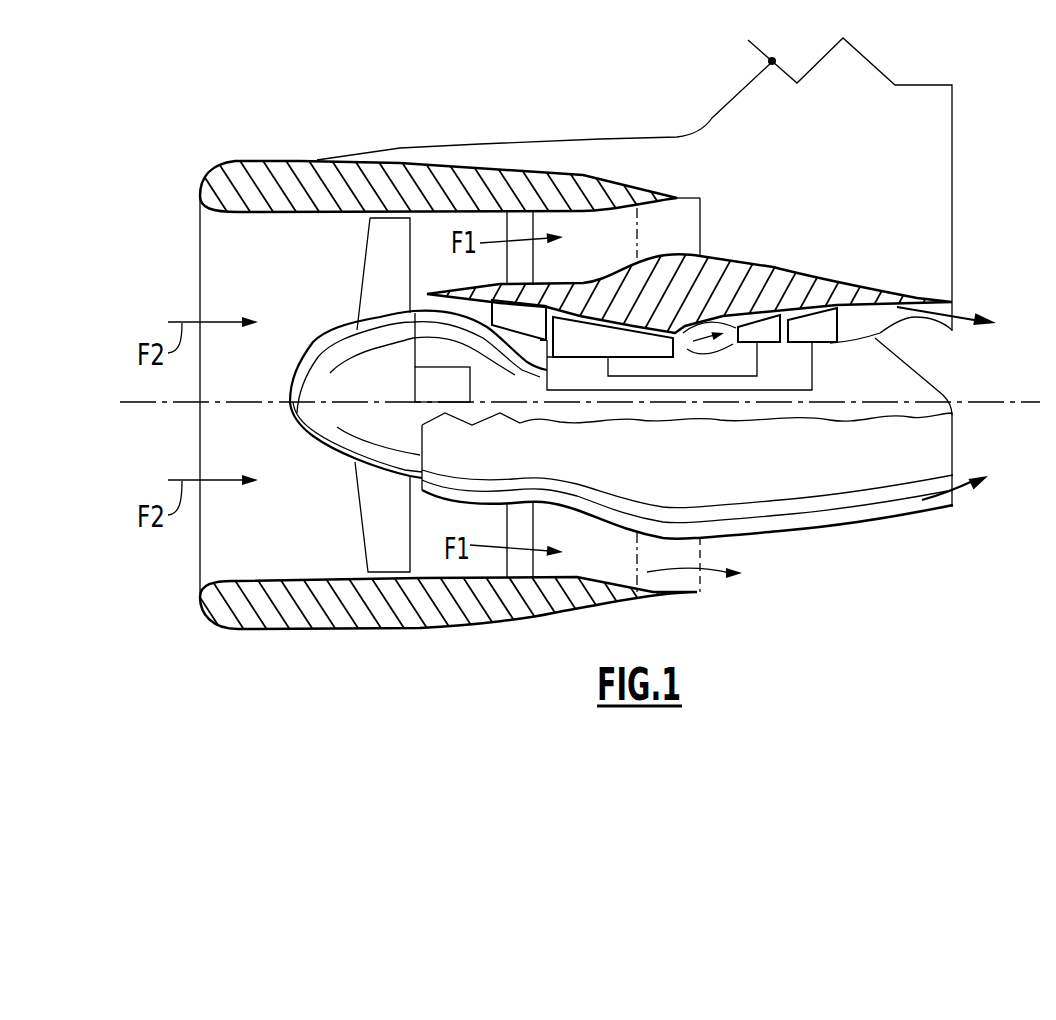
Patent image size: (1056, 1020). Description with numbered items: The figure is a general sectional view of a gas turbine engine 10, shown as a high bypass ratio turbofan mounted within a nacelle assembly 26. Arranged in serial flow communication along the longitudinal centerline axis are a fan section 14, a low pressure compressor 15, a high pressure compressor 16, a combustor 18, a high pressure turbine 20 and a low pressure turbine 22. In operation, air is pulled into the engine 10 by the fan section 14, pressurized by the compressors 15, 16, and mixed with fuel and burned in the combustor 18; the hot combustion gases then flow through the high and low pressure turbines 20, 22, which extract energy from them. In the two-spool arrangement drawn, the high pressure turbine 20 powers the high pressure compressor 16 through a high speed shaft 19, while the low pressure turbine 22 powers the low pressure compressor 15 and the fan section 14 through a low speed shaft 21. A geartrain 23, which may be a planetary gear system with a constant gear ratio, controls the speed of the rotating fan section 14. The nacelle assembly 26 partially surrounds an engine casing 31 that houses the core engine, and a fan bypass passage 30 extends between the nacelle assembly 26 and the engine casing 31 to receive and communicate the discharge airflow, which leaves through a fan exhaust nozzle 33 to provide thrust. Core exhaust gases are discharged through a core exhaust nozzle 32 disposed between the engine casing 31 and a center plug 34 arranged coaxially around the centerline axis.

The gas turbine engine 10 is at (232, 135).
The fan section 14 is at (364, 536).
The low pressure compressor 15 is at (512, 348).
The high pressure compressor 16 is at (593, 340).
The combustor 18 is at (718, 346).
The high speed shaft 19 is at (678, 377).
The high pressure turbine 20 is at (767, 344).
The low speed shaft 21 is at (633, 392).
The low pressure turbine 22 is at (845, 344).
The geartrain 23 is at (459, 398).
The nacelle assembly 26 is at (276, 158).
The fan bypass passage 30 is at (590, 243).
The engine casing 31 is at (828, 283).
The core exhaust nozzle 32 is at (954, 302).
The fan exhaust nozzle 33 is at (676, 195).
The center plug 34 is at (905, 373).